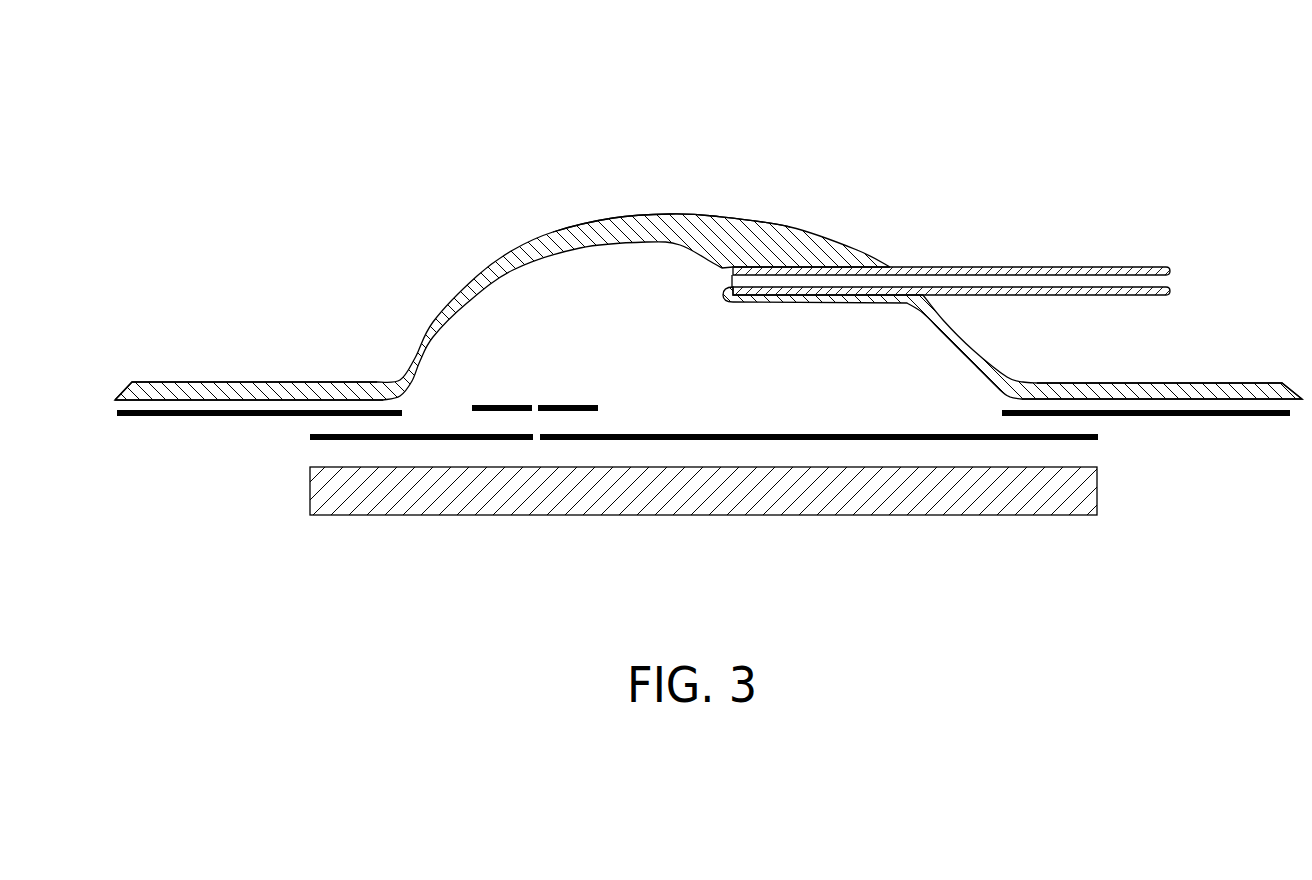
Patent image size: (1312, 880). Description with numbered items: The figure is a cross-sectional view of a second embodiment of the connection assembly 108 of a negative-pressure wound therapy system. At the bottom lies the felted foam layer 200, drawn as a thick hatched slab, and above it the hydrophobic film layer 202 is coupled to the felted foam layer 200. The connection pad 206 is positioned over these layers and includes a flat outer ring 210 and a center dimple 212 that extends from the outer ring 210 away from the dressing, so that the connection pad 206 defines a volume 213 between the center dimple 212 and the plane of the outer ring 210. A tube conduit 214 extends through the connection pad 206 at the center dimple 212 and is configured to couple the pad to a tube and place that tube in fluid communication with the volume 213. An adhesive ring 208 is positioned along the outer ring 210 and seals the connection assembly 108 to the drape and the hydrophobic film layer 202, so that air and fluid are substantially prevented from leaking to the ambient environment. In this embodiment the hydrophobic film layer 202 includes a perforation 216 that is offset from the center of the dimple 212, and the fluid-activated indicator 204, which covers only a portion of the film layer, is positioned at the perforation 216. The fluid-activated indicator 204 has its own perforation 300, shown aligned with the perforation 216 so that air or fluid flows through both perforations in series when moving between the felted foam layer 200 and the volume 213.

The connection assembly 108 is at (350, 99).
The felted foam layer 200 is at (855, 508).
The hydrophobic film layer 202 is at (307, 438).
The fluid-activated indicator 204 is at (515, 405).
The connection pad 206 is at (477, 290).
The adhesive ring 208 is at (184, 417).
The flat outer ring 210 is at (192, 383).
The center dimple 212 is at (671, 222).
The volume 213 is at (688, 345).
The tube conduit 214 is at (950, 276).
The perforation 216 is at (536, 441).
The perforation 300 is at (540, 405).